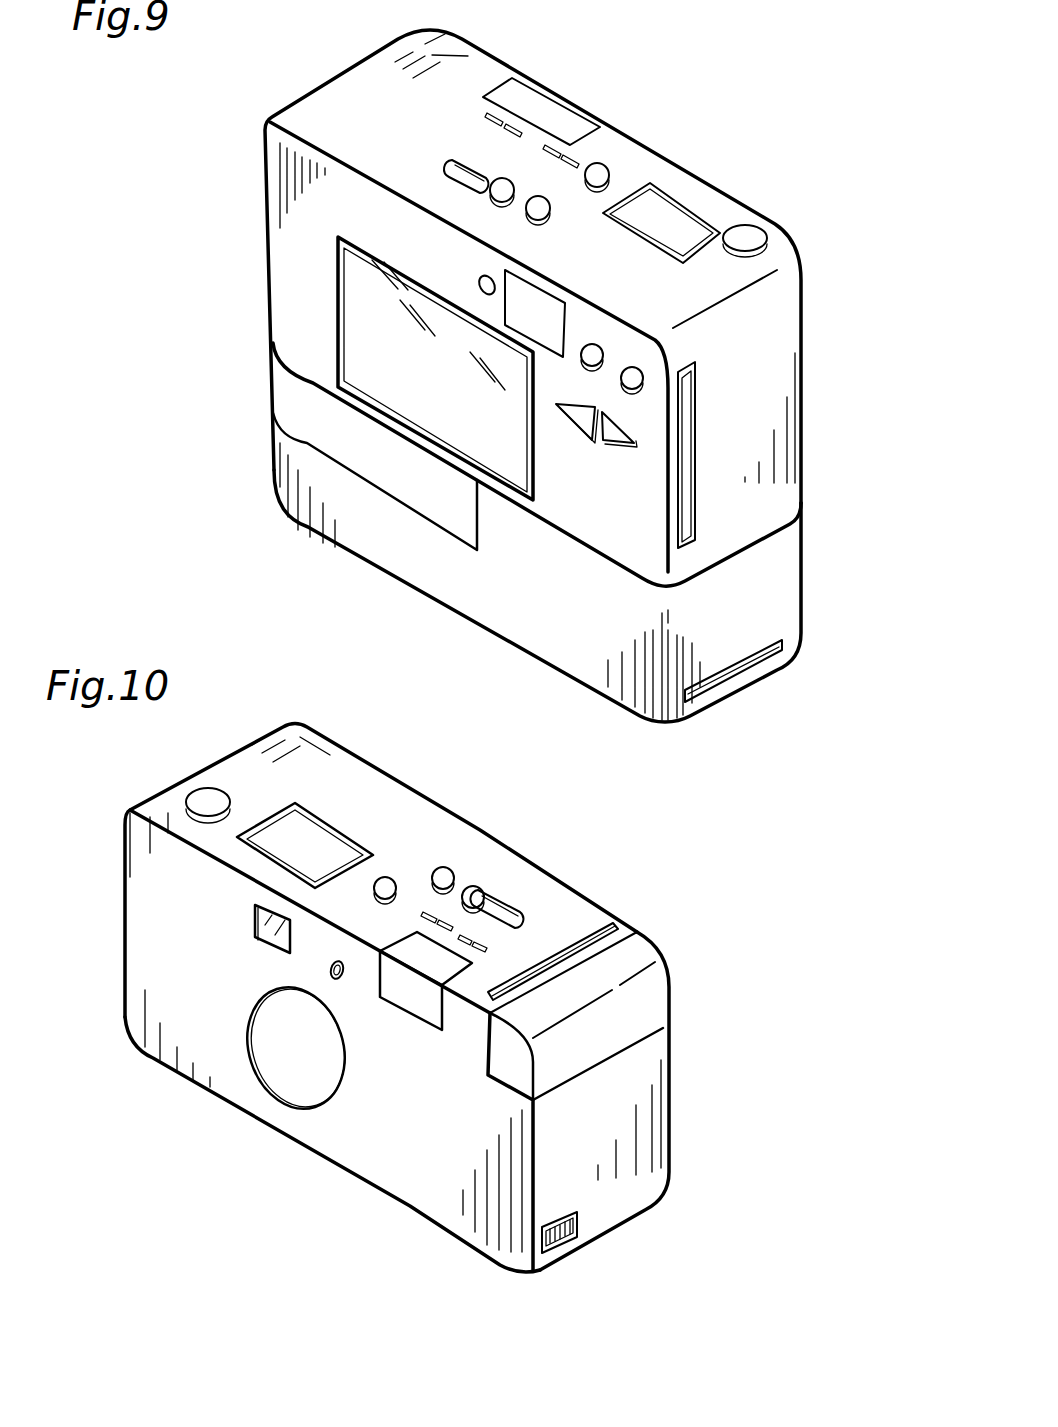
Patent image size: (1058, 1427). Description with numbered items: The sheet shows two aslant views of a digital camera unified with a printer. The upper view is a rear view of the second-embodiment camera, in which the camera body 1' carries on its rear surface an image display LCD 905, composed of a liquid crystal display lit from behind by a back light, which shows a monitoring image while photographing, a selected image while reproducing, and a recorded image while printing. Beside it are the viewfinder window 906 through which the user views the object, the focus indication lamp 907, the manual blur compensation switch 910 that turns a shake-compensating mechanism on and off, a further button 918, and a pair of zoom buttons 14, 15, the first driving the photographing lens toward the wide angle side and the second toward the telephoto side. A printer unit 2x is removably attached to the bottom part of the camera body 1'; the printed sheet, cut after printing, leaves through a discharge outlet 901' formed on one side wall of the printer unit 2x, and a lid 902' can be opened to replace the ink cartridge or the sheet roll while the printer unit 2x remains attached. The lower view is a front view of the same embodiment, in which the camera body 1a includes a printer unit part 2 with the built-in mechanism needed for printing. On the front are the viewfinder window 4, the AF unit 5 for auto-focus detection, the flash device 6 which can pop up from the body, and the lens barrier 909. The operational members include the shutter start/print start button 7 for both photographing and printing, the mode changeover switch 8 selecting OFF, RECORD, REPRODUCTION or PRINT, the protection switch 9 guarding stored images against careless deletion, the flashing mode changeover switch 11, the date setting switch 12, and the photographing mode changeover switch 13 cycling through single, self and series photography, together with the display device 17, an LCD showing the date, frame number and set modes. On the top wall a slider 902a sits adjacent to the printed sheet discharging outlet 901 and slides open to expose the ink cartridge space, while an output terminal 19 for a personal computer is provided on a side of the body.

In FIG. 9, the camera body 1' is at (559, 308).
In FIG. 9, the printer unit 2x is at (803, 553).
In FIG. 9, the discharge outlet 901' is at (783, 637).
In FIG. 9, the image display LCD 905 is at (355, 343).
In FIG. 9, the lid 902' is at (232, 382).
In FIG. 9, the focus indication lamp 907 is at (479, 276).
In FIG. 9, the viewfinder window 906 is at (538, 305).
In FIG. 9, the manual blur compensation switch 910 is at (592, 344).
In FIG. 9, the button 918 is at (640, 368).
In FIG. 9, the zoom button 14 is at (576, 418).
In FIG. 9, the zoom button 15 is at (618, 442).
In FIG. 10, the camera body 1a is at (419, 786).
In FIG. 10, the printer unit part 2 is at (607, 1206).
In FIG. 10, the slider 902a is at (652, 965).
In FIG. 10, the printed sheet discharging outlet 901 is at (577, 916).
In FIG. 10, the shutter start/print start button 7 is at (193, 793).
In FIG. 10, the display device 17 is at (333, 826).
In FIG. 10, the flashing mode changeover switch 11 is at (388, 877).
In FIG. 10, the protection switch 9 is at (445, 866).
In FIG. 10, the mode changeover switch 8 is at (480, 888).
In FIG. 10, the date setting switch 12 is at (420, 917).
In FIG. 10, the photographing mode changeover switch 13 is at (491, 947).
In FIG. 10, the flash device 6 is at (400, 1010).
In FIG. 10, the viewfinder window 4 is at (255, 920).
In FIG. 10, the lens barrier 909 is at (266, 1050).
In FIG. 10, the AF unit 5 is at (338, 982).
In FIG. 10, the output terminal for PC 19 is at (560, 1240).